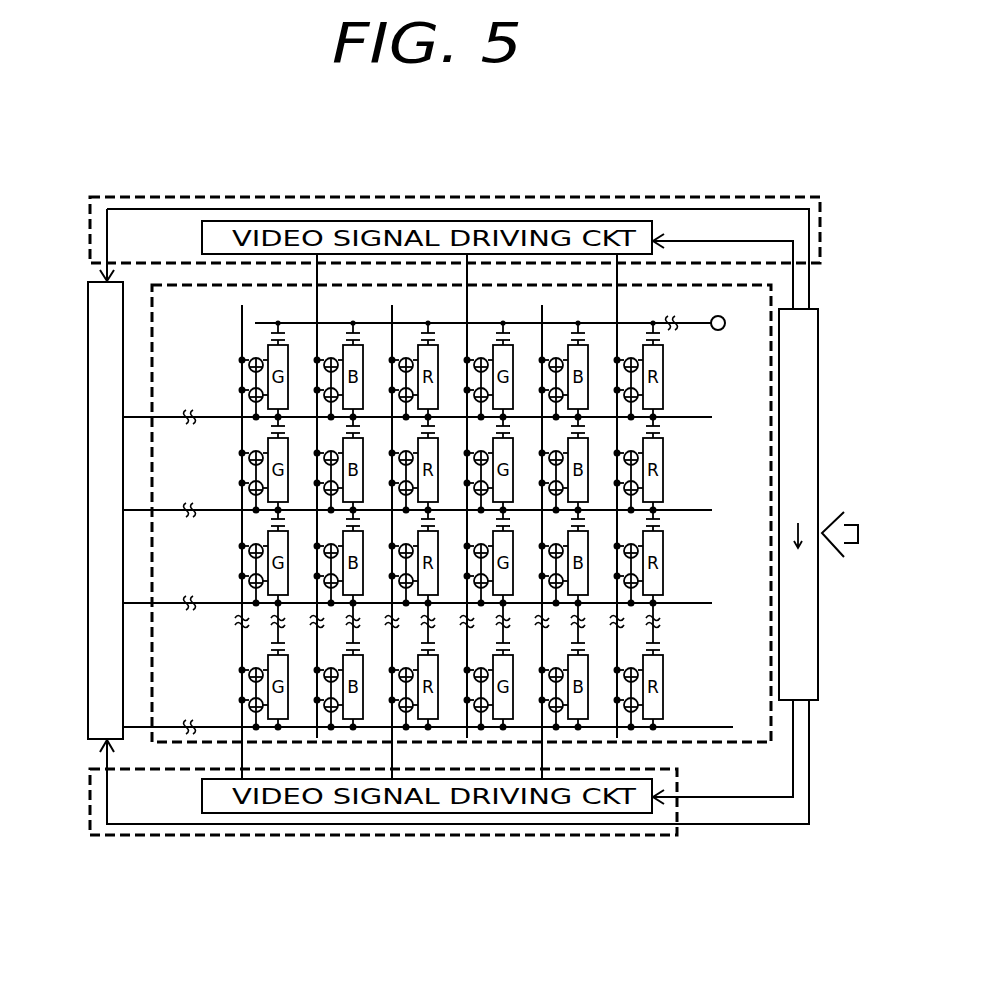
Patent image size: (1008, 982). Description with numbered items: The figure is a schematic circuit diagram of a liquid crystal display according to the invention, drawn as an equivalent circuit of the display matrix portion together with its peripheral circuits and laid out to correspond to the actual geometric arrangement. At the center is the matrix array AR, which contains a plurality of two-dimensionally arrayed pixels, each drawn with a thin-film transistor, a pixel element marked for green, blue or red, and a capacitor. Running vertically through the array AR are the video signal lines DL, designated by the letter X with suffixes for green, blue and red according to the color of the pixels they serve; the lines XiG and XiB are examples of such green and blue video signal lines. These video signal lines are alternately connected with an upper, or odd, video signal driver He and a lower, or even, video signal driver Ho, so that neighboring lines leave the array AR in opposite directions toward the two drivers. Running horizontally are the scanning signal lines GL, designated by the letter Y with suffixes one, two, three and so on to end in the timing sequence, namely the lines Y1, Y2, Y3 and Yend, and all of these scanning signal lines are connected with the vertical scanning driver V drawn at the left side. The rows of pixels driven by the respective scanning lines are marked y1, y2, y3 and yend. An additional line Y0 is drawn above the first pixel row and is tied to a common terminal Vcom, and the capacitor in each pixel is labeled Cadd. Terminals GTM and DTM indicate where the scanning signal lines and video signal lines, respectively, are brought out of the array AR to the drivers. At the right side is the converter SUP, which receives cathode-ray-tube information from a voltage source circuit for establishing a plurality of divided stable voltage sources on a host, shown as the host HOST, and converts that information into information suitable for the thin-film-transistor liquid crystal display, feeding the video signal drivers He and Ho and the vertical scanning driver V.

The upper (odd) video signal driver He is at (191, 197).
The lower (even) video signal driver Ho is at (225, 836).
The matrix array AR is at (182, 286).
The vertical scanning driver V is at (87, 498).
The gate terminal GTM is at (140, 418).
The converter SUP is at (817, 623).
The host computer HOST is at (853, 554).
The drain terminal DTM is at (617, 276).
The common gate line Y0 is at (272, 322).
The common voltage terminal Vcom is at (722, 331).
The additional (storage) capacitor Cadd is at (670, 428).
The scanning signal line Y1 is at (417, 406).
The scanning signal line Y2 is at (417, 498).
The scanning signal line Y3 is at (417, 590).
The scanning signal line Yend is at (428, 714).
The scanning signal lines GL is at (226, 602).
The video signal lines DL is at (242, 640).
The pixel row 1 y1 is at (224, 377).
The pixel row 2 y2 is at (224, 461).
The pixel row 3 y3 is at (224, 555).
The last pixel row yend is at (210, 678).
The video signal line XiG is at (242, 752).
The video signal line XiB is at (317, 300).